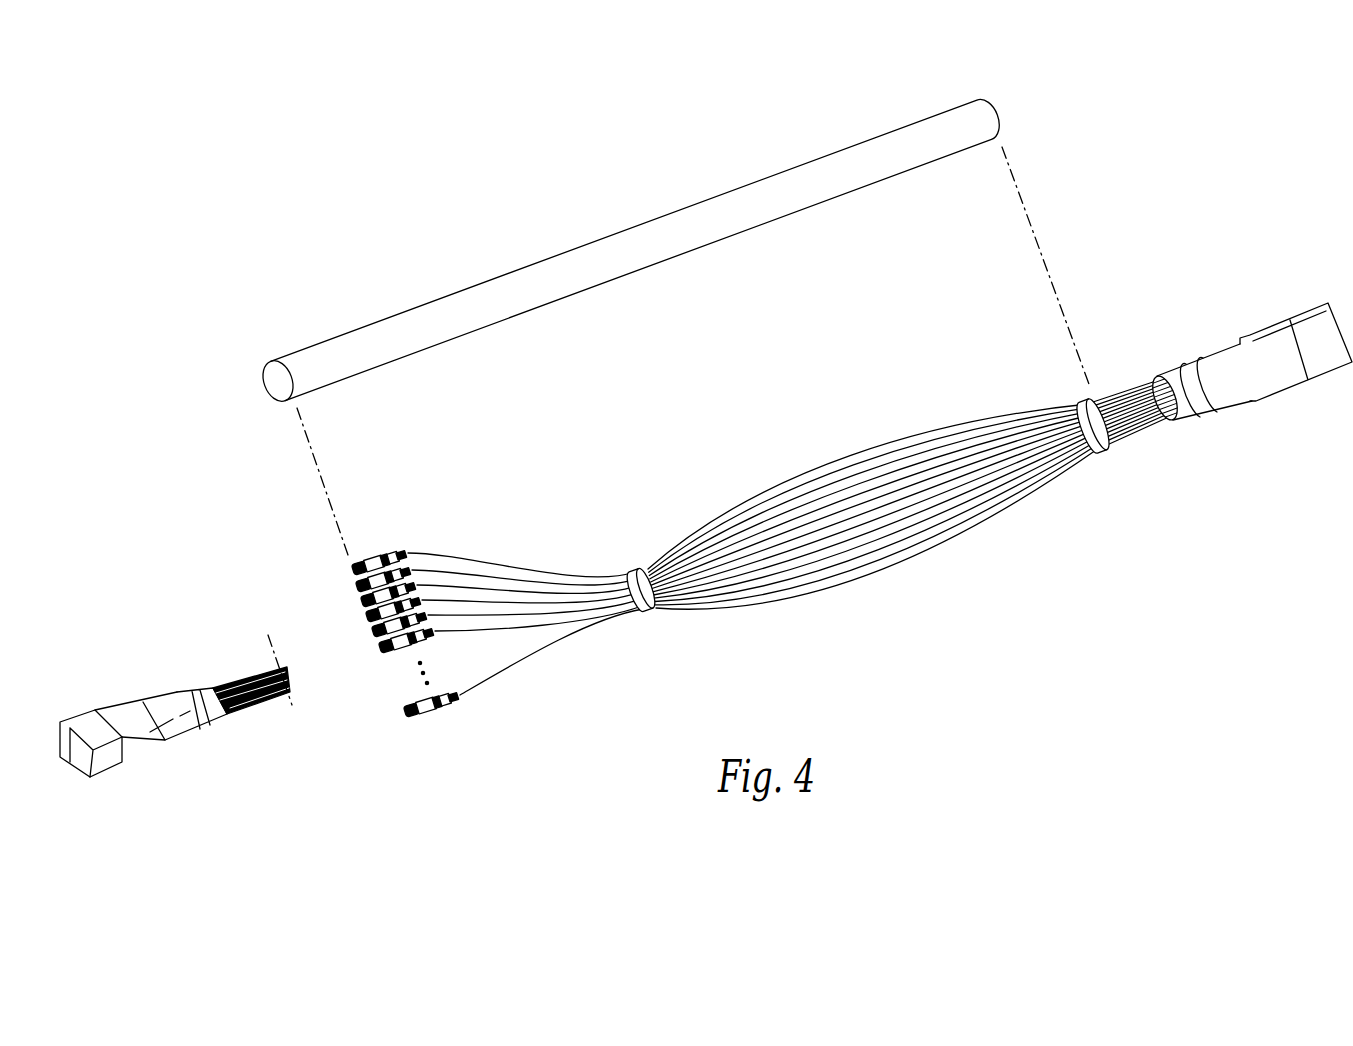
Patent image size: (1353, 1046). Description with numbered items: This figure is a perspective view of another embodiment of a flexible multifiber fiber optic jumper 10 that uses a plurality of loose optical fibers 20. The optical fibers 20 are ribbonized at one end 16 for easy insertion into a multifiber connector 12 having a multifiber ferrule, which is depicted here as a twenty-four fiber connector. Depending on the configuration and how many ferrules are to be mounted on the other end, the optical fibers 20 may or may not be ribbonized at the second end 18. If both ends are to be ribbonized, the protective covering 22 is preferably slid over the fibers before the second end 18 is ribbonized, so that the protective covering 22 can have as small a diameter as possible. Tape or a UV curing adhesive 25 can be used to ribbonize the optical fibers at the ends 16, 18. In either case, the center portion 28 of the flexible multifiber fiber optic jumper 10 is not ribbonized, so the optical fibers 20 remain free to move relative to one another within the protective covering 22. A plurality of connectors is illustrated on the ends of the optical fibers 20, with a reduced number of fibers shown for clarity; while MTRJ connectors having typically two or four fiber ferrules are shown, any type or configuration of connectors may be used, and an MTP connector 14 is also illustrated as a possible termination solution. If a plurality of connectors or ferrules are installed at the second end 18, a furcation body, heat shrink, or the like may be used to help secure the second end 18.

The flexible multifiber fiber optic jumper 10 is at (873, 496).
The multifiber connector 12 is at (1247, 330).
The MTP connector 14 is at (127, 712).
The end 16 is at (1097, 384).
The second end 18 is at (626, 640).
The optical fibers 20 is at (837, 456).
The protective covering 22 is at (642, 224).
The UV curing adhesive 25 is at (644, 568).
The center portion 28 is at (939, 414).